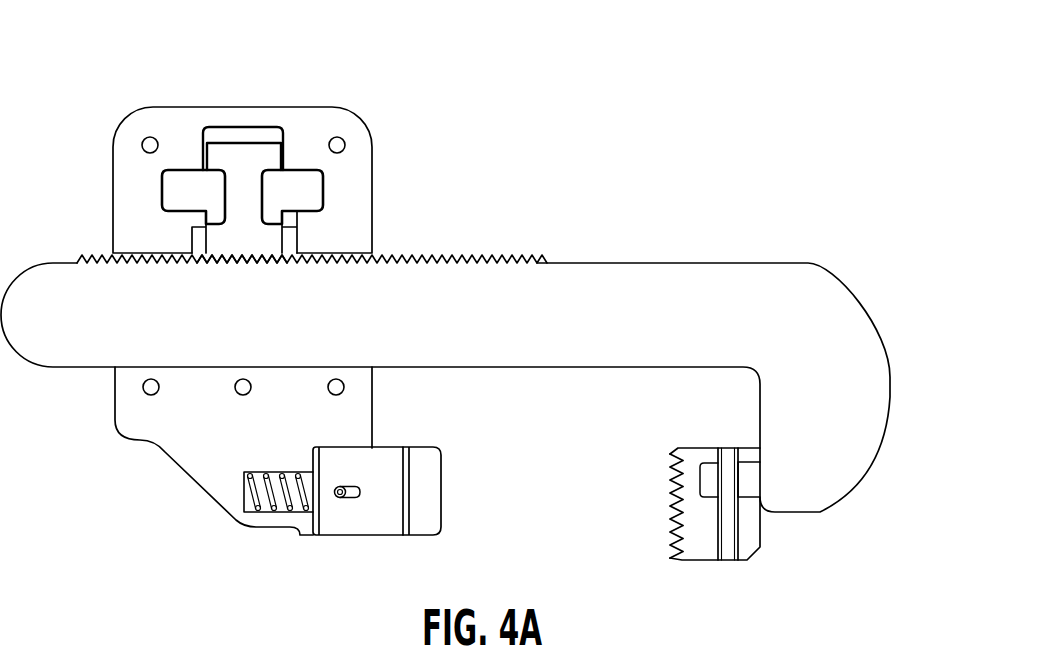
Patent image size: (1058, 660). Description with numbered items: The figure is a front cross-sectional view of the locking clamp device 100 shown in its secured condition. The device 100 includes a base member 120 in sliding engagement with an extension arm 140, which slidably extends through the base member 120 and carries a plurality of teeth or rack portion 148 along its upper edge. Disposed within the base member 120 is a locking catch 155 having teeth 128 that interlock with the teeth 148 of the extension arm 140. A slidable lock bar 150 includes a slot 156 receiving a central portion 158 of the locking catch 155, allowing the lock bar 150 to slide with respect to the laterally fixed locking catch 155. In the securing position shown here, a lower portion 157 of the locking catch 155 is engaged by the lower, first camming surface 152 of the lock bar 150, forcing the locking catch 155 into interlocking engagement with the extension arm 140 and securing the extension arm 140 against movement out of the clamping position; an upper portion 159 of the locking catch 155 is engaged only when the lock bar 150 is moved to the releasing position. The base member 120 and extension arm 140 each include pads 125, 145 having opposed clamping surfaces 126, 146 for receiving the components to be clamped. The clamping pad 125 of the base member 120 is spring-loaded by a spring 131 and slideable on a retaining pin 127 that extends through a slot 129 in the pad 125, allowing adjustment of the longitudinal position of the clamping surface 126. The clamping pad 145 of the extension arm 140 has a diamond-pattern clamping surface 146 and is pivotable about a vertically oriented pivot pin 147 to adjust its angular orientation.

The device 100 is at (648, 125).
The base member 120 is at (207, 438).
The clamping pad 125 is at (360, 522).
The clamping surface 126 is at (418, 498).
The retaining pin 127 is at (338, 498).
The teeth 128 is at (240, 258).
The slot 129 is at (360, 497).
The spring 131 is at (250, 513).
The extension arm 140 is at (628, 283).
The clamping pad 145 is at (700, 547).
The clamping surface 146 is at (667, 527).
The pivot pin 147 is at (728, 460).
The rack portion 148 is at (453, 256).
The lock bar 150 is at (302, 185).
The camming surface 152 is at (273, 227).
The locking catch 155 is at (237, 165).
The slot 156 is at (263, 196).
The lower portion 157 is at (212, 240).
The central portion 158 is at (233, 192).
The upper portion 159 is at (220, 153).